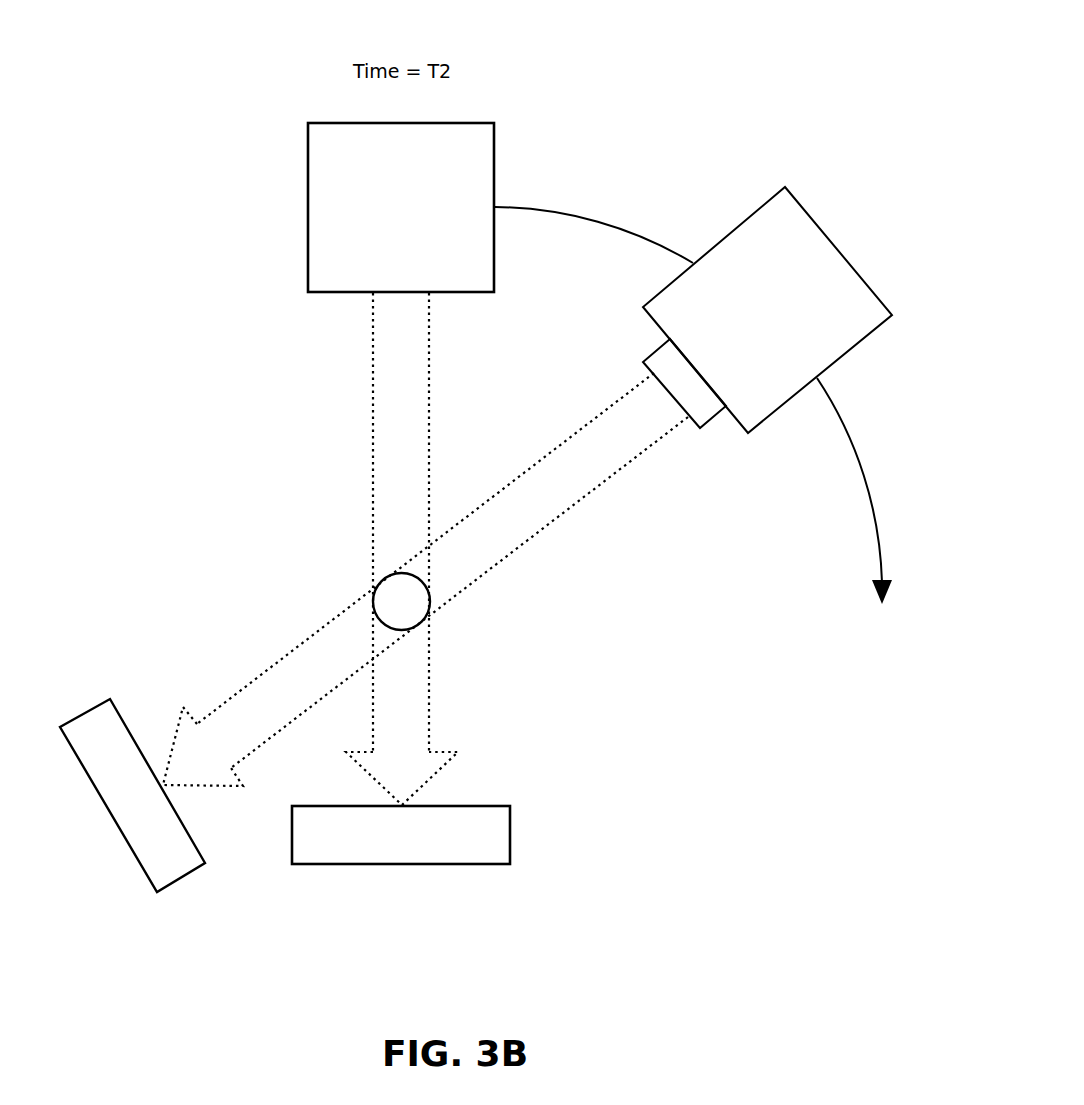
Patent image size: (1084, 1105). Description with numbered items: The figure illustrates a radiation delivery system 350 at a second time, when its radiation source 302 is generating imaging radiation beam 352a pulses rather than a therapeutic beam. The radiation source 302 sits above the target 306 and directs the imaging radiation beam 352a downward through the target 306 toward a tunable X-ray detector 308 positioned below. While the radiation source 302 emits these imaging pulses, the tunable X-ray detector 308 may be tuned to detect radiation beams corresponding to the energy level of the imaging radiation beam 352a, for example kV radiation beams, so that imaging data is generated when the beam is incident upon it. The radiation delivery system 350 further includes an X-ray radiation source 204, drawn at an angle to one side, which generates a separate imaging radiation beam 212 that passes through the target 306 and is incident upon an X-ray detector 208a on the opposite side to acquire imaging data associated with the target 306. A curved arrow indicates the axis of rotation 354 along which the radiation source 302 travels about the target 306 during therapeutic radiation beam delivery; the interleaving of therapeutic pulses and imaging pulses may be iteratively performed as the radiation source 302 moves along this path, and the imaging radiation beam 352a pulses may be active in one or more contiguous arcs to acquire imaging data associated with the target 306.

The radiation delivery system 350 is at (120, 45).
The radiation source 302 is at (401, 207).
The X-ray radiation source 204 is at (822, 226).
The imaging radiation beam 352a is at (373, 420).
The target 306 is at (375, 587).
The X-ray detector 208a is at (112, 695).
The axis of rotation 354 is at (867, 503).
The imaging radiation beam 212 is at (502, 558).
The tunable X-ray detector 308 is at (512, 827).